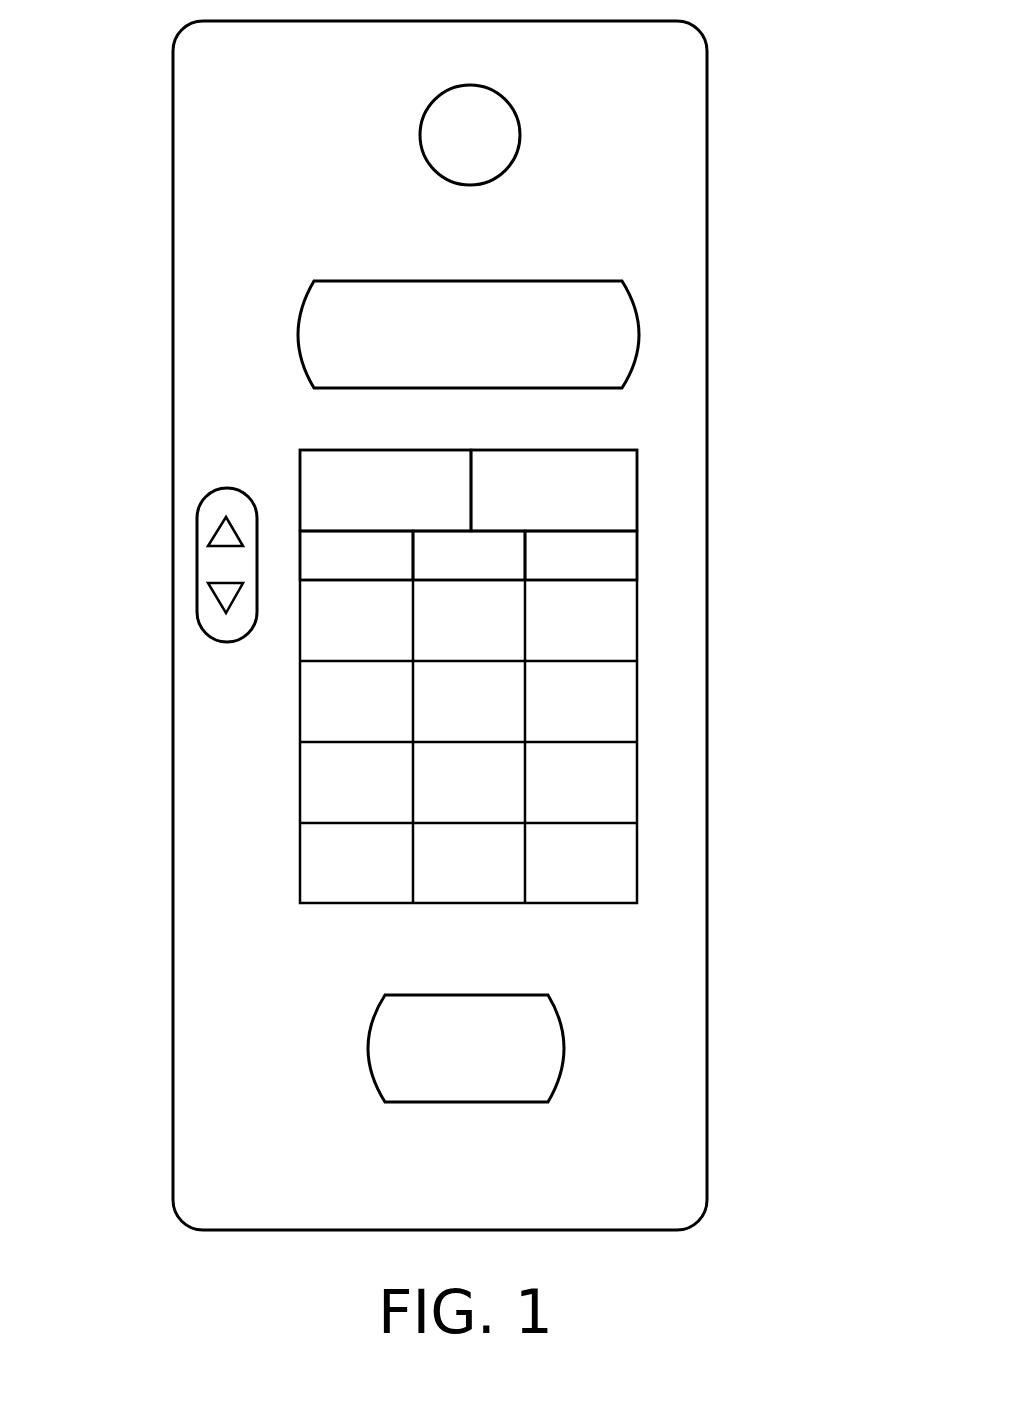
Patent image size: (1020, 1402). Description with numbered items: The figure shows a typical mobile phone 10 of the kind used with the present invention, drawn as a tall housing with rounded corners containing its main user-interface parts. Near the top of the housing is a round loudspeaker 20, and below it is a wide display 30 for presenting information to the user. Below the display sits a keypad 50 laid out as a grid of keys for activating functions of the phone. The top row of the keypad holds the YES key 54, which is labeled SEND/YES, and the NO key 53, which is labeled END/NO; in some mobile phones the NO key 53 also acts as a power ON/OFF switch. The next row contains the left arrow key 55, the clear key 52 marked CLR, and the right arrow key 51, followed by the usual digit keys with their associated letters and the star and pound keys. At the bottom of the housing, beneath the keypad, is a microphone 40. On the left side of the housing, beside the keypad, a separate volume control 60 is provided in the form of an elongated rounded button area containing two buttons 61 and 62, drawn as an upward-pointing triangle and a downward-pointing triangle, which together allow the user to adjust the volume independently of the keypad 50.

The mobile phone 10 is at (706, 330).
The loudspeaker 20 is at (519, 145).
The display 30 is at (518, 288).
The microphone 40 is at (468, 1103).
The keypad 50 is at (430, 903).
The right arrow key 51 is at (630, 565).
The clear key 52 is at (518, 541).
The NO key 53 is at (620, 457).
The YES key 54 is at (448, 457).
The left arrow key 55 is at (300, 570).
The volume control 60 is at (197, 567).
The button 61 is at (212, 530).
The button 62 is at (215, 600).